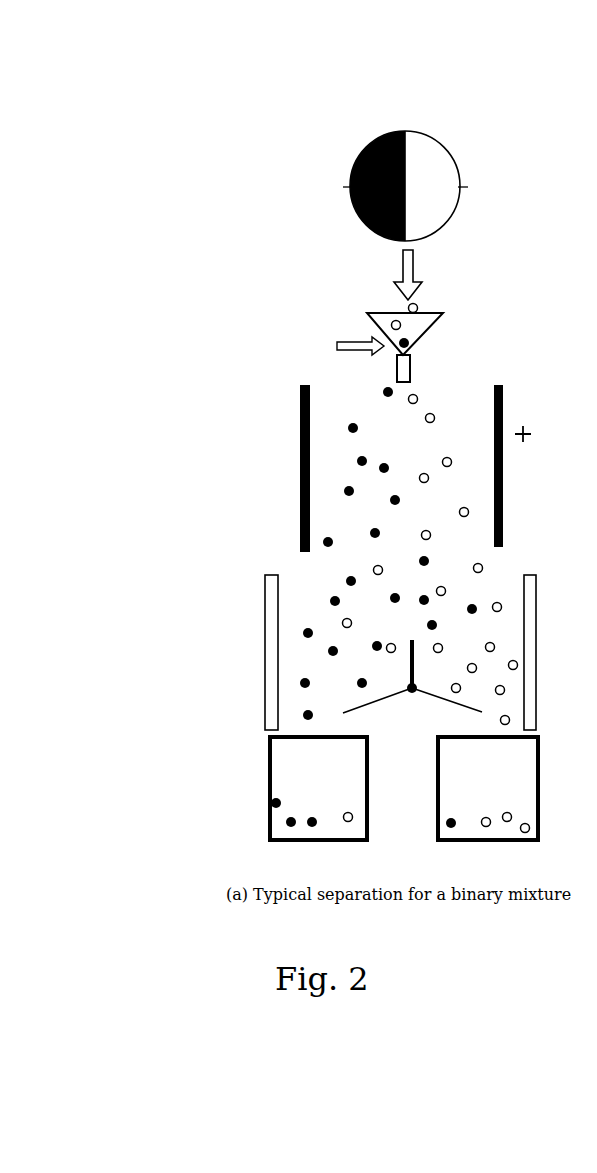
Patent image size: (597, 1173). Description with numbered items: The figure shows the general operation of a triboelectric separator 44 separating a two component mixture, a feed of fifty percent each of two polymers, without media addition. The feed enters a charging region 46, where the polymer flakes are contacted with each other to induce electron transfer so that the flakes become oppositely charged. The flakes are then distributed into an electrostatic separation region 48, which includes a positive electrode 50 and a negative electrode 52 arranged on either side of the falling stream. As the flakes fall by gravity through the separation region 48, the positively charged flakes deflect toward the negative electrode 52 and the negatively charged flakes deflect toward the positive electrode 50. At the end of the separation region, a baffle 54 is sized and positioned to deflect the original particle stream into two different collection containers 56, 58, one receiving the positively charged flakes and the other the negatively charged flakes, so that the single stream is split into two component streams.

The separator 44 is at (244, 248).
The charging region 46 is at (430, 330).
The electrostatic separation region 48 is at (203, 380).
The positive electrode 50 is at (505, 397).
The negative electrode 52 is at (300, 400).
The baffle 54 is at (408, 667).
The collection container 56 is at (312, 841).
The collection container 58 is at (483, 841).